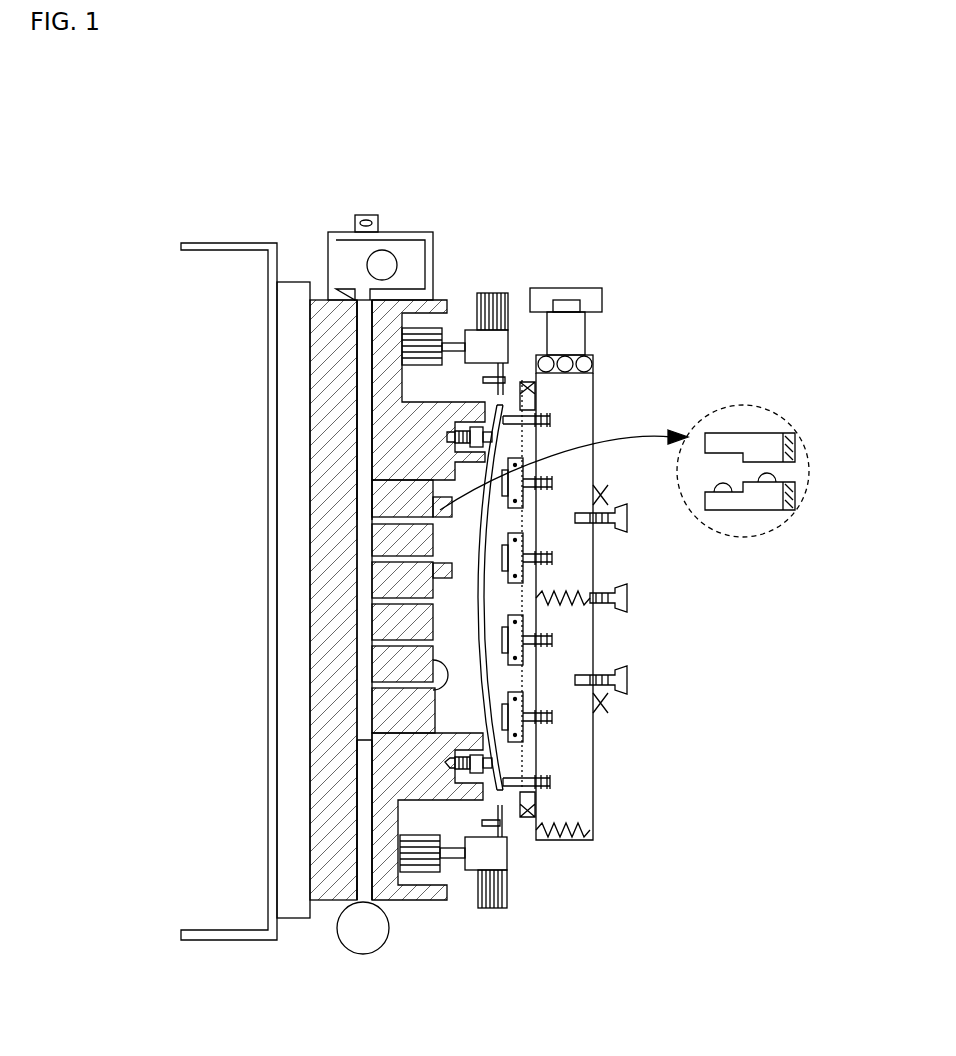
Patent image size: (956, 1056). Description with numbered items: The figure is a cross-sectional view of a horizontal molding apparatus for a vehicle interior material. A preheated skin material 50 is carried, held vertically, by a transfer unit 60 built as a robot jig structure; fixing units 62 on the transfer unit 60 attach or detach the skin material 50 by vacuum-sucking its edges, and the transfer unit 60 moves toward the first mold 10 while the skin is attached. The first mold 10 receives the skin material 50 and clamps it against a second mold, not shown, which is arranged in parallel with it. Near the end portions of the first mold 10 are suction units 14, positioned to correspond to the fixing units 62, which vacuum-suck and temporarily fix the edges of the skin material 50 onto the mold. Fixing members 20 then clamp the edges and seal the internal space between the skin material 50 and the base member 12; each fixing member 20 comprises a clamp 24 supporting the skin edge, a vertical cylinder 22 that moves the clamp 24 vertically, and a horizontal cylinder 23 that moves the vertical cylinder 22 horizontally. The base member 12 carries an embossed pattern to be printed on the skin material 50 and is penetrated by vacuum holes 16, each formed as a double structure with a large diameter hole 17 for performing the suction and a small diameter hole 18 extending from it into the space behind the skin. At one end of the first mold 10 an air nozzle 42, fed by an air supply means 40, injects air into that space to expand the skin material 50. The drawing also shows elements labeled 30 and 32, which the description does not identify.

The first mold 10 is at (256, 612).
The base member 12 is at (445, 674).
The suction units 14 is at (445, 437).
The vacuum holes 16 is at (400, 552).
The large diameter hole 17 is at (717, 495).
The small diameter hole 18 is at (772, 485).
The fixing members 20 is at (457, 880).
The vertical cylinders 22 is at (468, 370).
The horizontal cylinders 23 is at (447, 345).
The clamps 24 is at (505, 295).
The support block 30 is at (330, 232).
The upper guide rail 32 is at (360, 352).
The air supply means 40 is at (350, 930).
The air nozzle 42 is at (360, 868).
The skin material 50 is at (463, 762).
The transfer unit 60 is at (604, 780).
The fixing units 62 is at (519, 800).